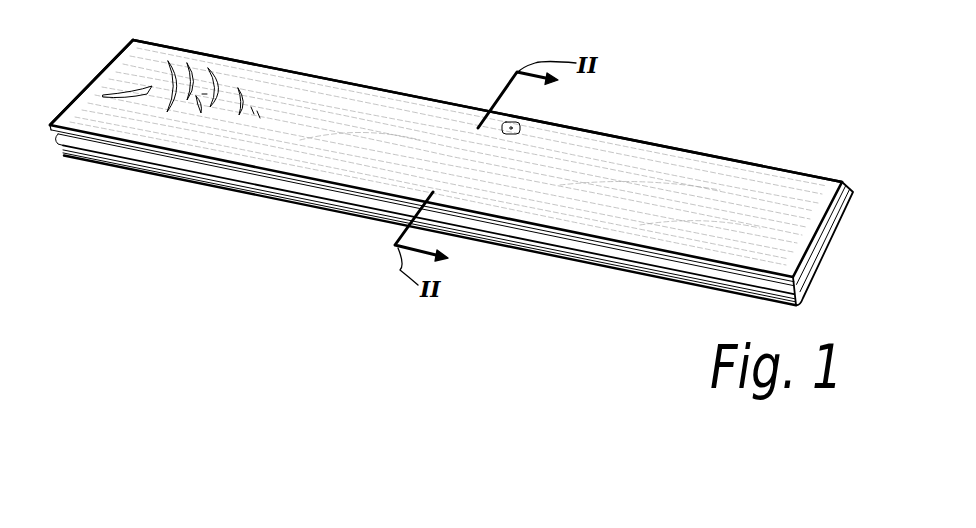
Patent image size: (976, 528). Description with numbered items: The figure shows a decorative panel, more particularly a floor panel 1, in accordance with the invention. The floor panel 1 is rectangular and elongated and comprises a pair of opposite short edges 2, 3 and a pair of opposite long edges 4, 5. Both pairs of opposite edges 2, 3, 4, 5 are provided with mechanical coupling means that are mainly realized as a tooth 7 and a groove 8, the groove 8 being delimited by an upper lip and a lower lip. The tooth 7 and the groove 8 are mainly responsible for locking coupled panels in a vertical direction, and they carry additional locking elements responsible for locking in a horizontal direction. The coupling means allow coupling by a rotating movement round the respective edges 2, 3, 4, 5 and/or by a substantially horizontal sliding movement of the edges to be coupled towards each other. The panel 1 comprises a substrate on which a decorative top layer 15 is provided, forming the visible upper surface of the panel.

The floor panel 1 is at (726, 135).
The short edge 2 is at (102, 59).
The short edge 3 is at (845, 230).
The long edge 4 is at (638, 132).
The long edge 5 is at (666, 281).
The tooth 7 is at (52, 131).
The groove 8 is at (263, 182).
The decorative top layer 15 is at (312, 86).